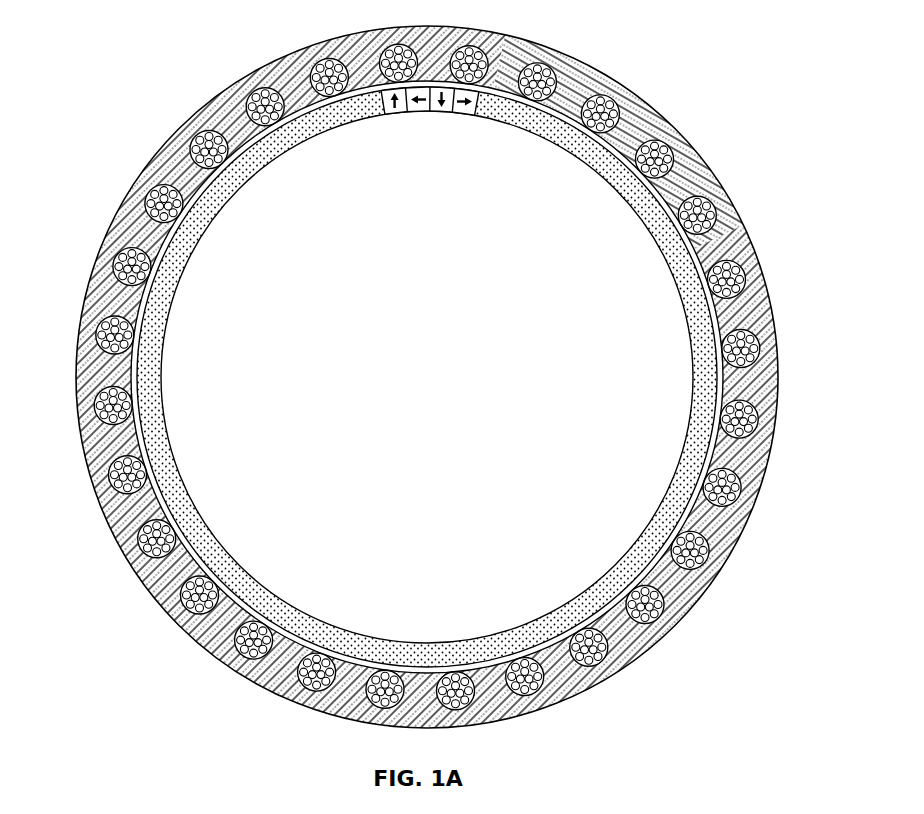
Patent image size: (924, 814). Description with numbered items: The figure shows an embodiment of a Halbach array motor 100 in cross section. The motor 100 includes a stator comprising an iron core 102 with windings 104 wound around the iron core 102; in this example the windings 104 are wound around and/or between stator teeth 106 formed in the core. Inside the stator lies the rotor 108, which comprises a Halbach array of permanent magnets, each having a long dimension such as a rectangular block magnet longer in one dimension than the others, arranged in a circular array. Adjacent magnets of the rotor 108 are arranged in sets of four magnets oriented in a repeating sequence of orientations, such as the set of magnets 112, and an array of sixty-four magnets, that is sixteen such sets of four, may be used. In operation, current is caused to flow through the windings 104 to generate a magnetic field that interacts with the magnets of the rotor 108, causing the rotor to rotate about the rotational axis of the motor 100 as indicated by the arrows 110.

The motor 100 is at (138, 57).
The iron core 102 is at (635, 108).
The windings 104 is at (648, 173).
The stator teeth 106 is at (617, 140).
The rotor 108 is at (697, 350).
The arrows 110 is at (285, 172).
The set of magnets 112 is at (385, 128).